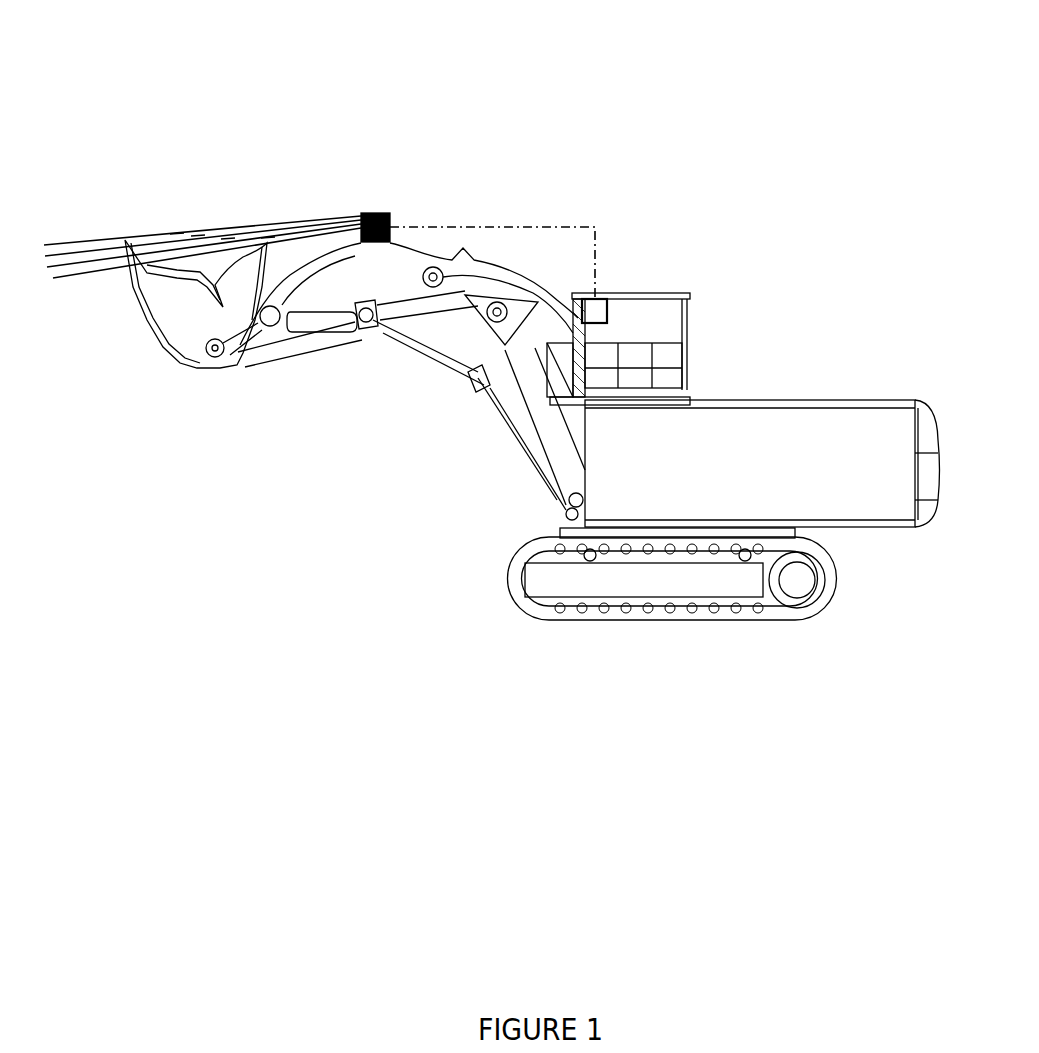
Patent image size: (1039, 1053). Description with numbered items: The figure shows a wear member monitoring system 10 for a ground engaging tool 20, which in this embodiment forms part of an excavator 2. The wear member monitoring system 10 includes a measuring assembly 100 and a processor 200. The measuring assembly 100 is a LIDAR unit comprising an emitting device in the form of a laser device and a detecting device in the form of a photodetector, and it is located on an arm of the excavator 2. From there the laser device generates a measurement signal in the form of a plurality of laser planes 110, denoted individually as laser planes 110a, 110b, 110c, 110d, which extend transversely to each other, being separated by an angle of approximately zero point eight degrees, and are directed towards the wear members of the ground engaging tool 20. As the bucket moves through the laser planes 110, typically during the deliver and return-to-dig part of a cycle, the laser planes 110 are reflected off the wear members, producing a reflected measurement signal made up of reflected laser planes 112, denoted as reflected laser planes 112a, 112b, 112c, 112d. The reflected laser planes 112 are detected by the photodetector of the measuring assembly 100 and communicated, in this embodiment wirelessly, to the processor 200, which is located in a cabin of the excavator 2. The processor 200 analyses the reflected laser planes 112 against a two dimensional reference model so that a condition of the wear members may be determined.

The excavator 2 is at (880, 340).
The wear member monitoring system 10 is at (586, 127).
The ground engaging tool 20 is at (149, 270).
The measuring assembly 100 is at (385, 213).
The laser planes 110 is at (97, 118).
The laser plane 110a is at (98, 240).
The laser plane 110b is at (45, 256).
The laser plane 110c is at (47, 268).
The laser plane 110d is at (97, 272).
The reflected laser planes 112 is at (267, 69).
The reflected laser plane 112a is at (177, 232).
The reflected laser plane 112b is at (198, 235).
The reflected laser plane 112c is at (228, 238).
The reflected laser plane 112d is at (268, 237).
The processor 200 is at (607, 303).